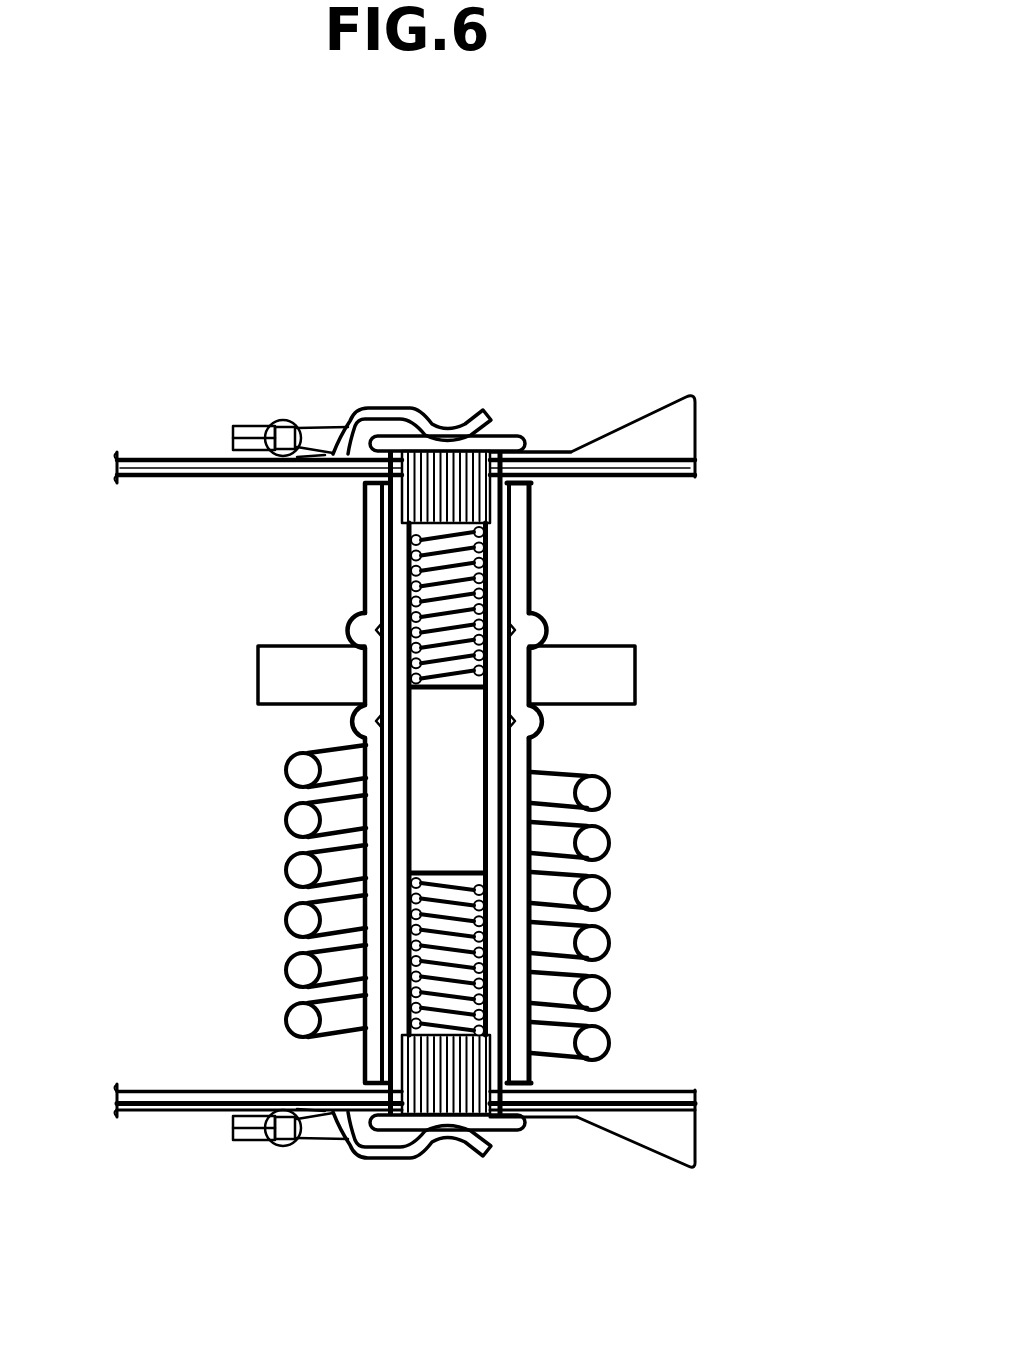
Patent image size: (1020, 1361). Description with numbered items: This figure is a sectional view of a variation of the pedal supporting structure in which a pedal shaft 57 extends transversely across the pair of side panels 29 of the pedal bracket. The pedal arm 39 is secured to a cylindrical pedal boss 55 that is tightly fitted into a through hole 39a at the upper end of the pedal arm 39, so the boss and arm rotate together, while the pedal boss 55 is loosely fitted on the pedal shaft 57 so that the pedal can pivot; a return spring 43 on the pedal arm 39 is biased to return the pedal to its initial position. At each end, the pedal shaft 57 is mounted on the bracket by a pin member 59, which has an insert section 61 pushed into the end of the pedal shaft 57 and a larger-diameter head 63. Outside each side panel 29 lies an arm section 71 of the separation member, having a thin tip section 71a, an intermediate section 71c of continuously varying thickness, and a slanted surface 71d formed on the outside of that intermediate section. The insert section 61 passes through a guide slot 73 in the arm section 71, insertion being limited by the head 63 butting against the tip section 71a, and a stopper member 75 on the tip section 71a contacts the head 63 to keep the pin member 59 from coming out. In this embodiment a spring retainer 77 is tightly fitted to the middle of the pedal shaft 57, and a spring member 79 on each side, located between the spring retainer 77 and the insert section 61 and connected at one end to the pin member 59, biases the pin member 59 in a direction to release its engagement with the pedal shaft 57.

The side panel 29 is at (177, 458).
The pedal arm 39 is at (637, 676).
The through hole 39a is at (362, 650).
The return spring 43 is at (612, 794).
The pedal boss 55 is at (535, 744).
The pedal shaft 57 is at (397, 742).
The pin member 59 is at (417, 784).
The insert section 61 is at (402, 495).
The head 63 is at (496, 432).
The arm section 71 is at (643, 785).
The tip section 71a is at (330, 1146).
The intermediate section 71c is at (643, 808).
The slanted surface 71d is at (661, 398).
The guide slot 73 is at (676, 432).
The stopper member 75 is at (375, 406).
The spring retainer 77 is at (440, 716).
The spring member 79 is at (488, 580).